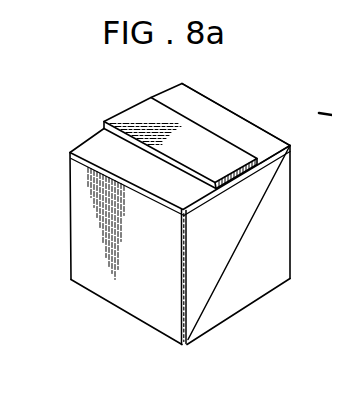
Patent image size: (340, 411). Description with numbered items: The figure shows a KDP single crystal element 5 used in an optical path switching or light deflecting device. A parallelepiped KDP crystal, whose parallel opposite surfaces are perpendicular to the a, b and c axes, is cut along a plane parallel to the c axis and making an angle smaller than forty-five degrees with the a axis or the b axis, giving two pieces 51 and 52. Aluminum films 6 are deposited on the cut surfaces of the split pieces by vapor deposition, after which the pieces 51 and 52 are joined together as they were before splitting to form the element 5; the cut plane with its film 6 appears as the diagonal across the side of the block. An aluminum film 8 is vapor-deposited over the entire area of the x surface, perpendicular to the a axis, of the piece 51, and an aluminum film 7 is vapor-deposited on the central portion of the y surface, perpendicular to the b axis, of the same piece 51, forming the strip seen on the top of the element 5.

The element 5 is at (294, 181).
The piece 51 is at (247, 128).
The piece 52 is at (275, 237).
The aluminum films 6 is at (237, 238).
The aluminum film 7 is at (132, 108).
The aluminum film 8 is at (123, 295).